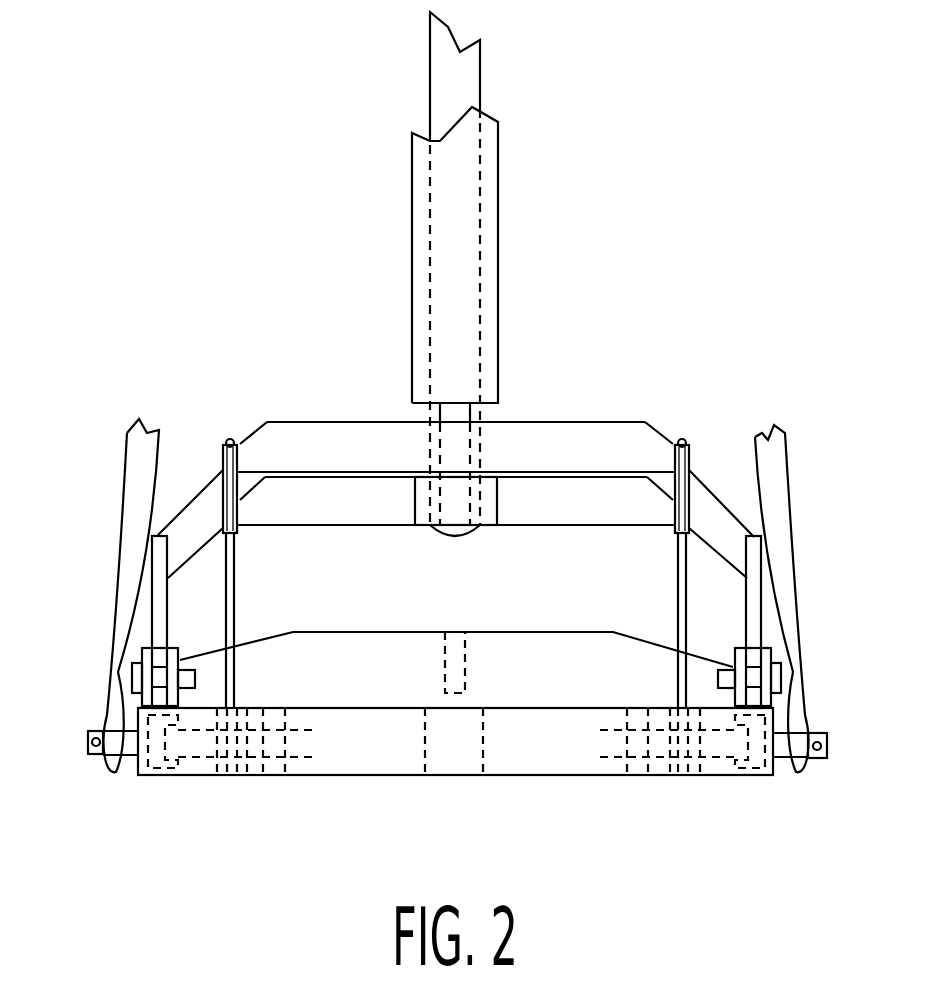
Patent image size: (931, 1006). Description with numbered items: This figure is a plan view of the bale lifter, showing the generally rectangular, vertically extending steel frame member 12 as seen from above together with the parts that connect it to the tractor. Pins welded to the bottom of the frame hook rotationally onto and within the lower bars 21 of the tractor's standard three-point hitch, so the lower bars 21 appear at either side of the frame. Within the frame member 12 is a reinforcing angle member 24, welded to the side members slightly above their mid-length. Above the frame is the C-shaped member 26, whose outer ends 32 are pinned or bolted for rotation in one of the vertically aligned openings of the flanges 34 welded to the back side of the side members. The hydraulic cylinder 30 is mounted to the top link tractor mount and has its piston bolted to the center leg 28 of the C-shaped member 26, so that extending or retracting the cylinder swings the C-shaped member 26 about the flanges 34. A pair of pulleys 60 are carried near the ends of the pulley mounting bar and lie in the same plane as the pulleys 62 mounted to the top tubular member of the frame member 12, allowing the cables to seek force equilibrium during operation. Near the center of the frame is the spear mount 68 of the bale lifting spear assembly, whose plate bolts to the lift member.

The frame member 12 is at (376, 782).
The lower bars 21 is at (782, 512).
The reinforcing angle member 24 is at (349, 646).
The C-shaped member 26 is at (278, 398).
The center leg 28 is at (553, 437).
The hydraulic cylinder 30 is at (488, 230).
The outer ends 32 is at (158, 598).
The flanges 34 is at (142, 656).
The pulleys 60 is at (225, 452).
The pulleys 62 is at (240, 780).
The spear mount 68 is at (490, 640).